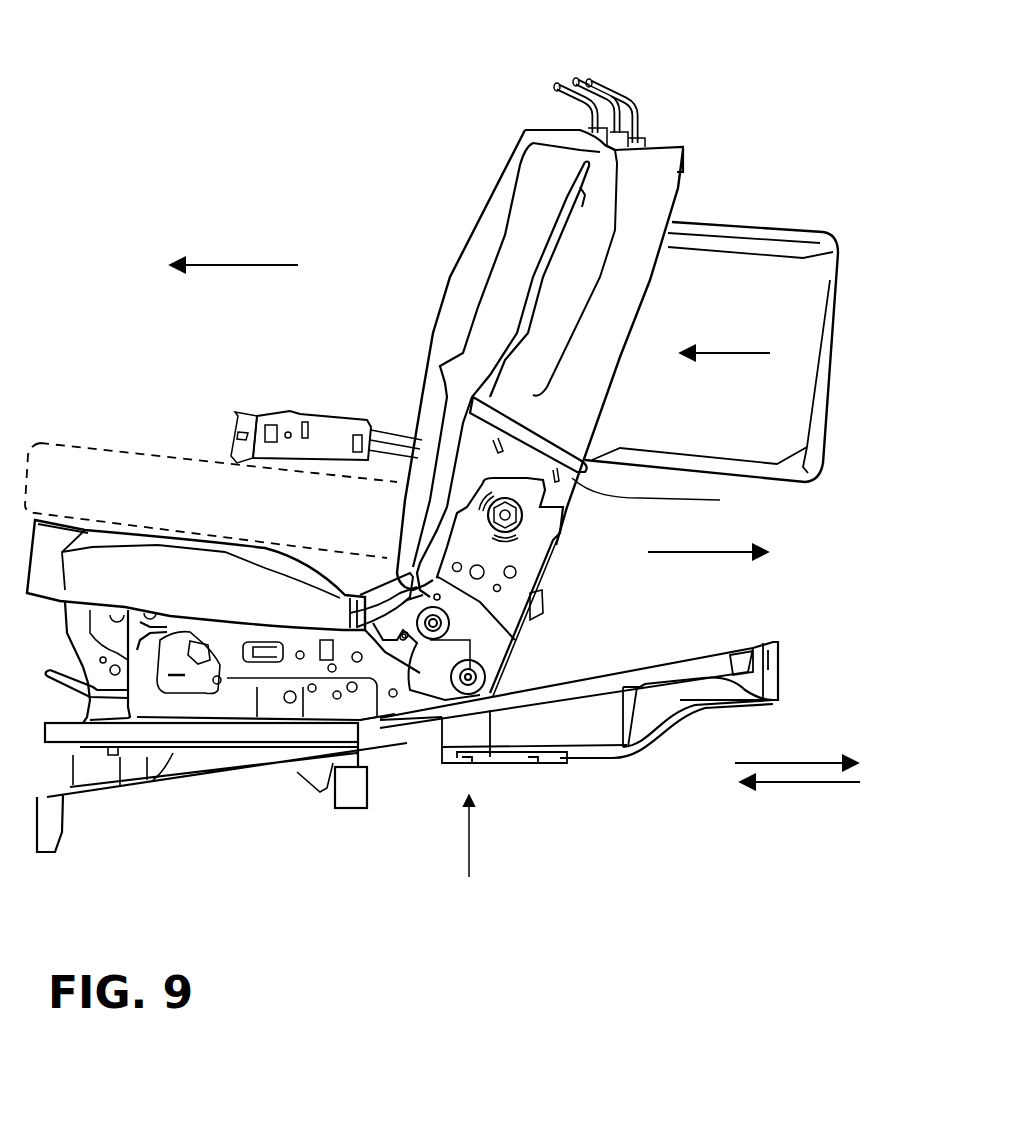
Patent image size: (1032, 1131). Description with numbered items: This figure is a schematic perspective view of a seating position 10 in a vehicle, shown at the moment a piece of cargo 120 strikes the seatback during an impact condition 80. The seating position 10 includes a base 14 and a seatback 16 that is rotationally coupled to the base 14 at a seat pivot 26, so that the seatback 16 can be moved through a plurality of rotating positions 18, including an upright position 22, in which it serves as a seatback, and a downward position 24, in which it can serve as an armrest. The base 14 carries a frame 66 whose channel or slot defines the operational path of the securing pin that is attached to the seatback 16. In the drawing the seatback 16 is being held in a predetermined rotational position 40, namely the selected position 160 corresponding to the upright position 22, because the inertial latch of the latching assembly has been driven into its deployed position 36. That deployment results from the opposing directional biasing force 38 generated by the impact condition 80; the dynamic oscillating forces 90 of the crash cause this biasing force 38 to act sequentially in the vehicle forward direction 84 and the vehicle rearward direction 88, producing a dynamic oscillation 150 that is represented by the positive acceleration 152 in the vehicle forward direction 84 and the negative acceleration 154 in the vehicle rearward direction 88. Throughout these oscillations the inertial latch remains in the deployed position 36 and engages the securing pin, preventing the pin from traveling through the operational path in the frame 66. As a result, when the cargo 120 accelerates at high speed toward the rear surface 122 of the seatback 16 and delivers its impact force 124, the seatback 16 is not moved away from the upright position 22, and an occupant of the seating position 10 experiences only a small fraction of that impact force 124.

The seating position 10 is at (465, 128).
The base 14 is at (290, 707).
The seatback 16 is at (640, 168).
The rotating positions 18 is at (470, 210).
The upright position 22 is at (523, 122).
The downward position 24 is at (117, 440).
The seat pivot 26 is at (478, 682).
The deployed position 36 is at (448, 660).
The opposing directional biasing force 38 is at (222, 265).
The predetermined rotational position 40 is at (637, 90).
The frame 66 is at (493, 652).
The impact condition 80 is at (607, 784).
The vehicle forward direction 84 is at (200, 270).
The vehicle rearward direction 88 is at (708, 553).
The dynamic oscillating forces 90 is at (468, 851).
The cargo 120 is at (710, 265).
The rear surface 122 is at (720, 500).
The impact force 124 is at (737, 350).
The dynamic oscillations 150 is at (785, 795).
The positive acceleration 152 is at (257, 270).
The negative acceleration 154 is at (687, 558).
The selected position 160 is at (450, 277).